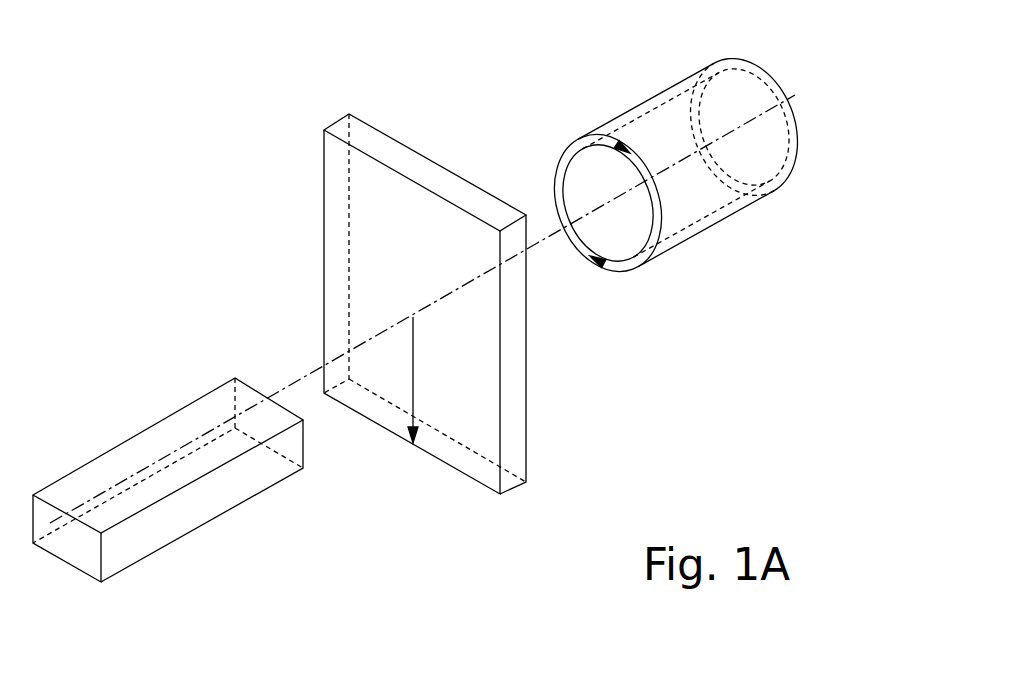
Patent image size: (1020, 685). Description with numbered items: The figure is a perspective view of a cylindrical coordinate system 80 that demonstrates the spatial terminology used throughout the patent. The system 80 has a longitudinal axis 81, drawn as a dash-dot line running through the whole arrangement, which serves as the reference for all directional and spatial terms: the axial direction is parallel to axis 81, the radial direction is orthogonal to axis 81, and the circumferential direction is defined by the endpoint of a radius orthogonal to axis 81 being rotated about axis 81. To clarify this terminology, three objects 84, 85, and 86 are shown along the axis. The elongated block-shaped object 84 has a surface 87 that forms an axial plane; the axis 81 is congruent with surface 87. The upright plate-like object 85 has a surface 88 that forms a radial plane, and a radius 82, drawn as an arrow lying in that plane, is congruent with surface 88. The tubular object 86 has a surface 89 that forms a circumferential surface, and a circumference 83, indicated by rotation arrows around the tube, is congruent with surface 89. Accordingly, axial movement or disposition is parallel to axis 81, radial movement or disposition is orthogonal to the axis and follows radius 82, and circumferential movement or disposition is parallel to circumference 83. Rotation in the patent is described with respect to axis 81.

The cylindrical coordinate system 80 is at (280, 178).
The longitudinal axis 81 is at (791, 99).
The radius 82 is at (413, 372).
The circumference 83 is at (554, 160).
The object 84 is at (130, 568).
The object 85 is at (538, 490).
The object 86 is at (700, 235).
The surface 87 is at (123, 461).
The surface 88 is at (340, 258).
The surface 89 is at (638, 104).